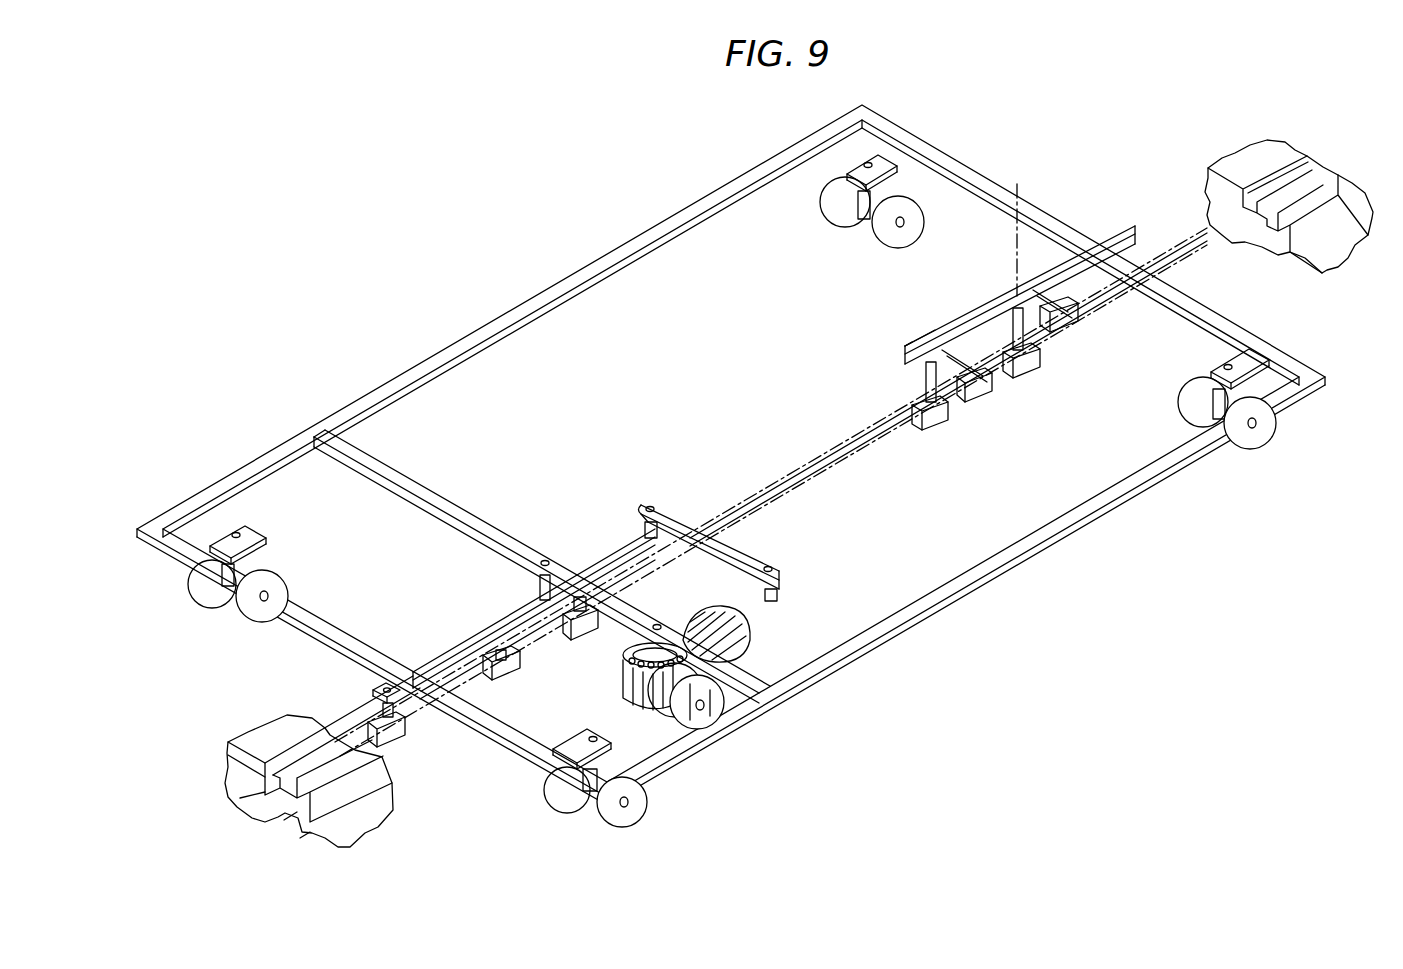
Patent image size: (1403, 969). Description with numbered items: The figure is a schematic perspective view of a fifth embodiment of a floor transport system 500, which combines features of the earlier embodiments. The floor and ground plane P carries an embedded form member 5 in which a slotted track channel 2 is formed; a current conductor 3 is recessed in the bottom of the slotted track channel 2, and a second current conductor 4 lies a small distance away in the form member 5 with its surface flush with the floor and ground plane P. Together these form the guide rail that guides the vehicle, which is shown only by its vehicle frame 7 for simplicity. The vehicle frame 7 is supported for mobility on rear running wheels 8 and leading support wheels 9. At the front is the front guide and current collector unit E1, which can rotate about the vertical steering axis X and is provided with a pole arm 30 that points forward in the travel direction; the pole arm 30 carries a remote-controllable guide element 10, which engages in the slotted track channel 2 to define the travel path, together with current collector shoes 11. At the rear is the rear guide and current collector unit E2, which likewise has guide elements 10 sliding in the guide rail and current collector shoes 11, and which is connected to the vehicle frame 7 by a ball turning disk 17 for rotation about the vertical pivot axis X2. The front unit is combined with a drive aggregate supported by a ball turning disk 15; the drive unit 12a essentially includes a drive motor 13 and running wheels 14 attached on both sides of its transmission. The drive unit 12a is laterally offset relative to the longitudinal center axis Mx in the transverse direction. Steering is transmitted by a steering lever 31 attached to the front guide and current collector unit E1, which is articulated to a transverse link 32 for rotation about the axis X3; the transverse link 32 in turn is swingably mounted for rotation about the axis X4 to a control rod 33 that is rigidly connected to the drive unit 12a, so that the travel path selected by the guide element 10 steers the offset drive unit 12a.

The floor transport system 500 is at (672, 142).
The vehicle frame 7 is at (620, 246).
The rear running wheels 8 is at (836, 210).
The leading support wheels 9 is at (258, 622).
The guide elements 10 is at (372, 726).
The current collector shoes 11 is at (522, 672).
The drive unit 12a is at (800, 650).
The drive motor 13 is at (738, 650).
The running wheels 14 is at (706, 712).
The ball turning disk 15 is at (740, 668).
The ball turning disk 17 is at (990, 290).
The pole arm 30 is at (445, 652).
The steering lever 31 is at (597, 566).
The transverse link 32 is at (664, 514).
The control rod 33 is at (740, 589).
The slotted track channel 2 is at (230, 757).
The current conductor 3 is at (238, 800).
The second current conductor 4 is at (300, 838).
The form member 5 is at (284, 820).
The floor and ground plane P is at (372, 828).
The longitudinal center axis Mx is at (1290, 206).
The vertical steering axis X is at (545, 560).
The vertical pivot axis X2 is at (1020, 221).
The axis X3 is at (651, 506).
The axis X4 is at (768, 566).
The front guide and current collector unit E1 is at (503, 618).
The rear guide and current collector unit E2 is at (935, 333).